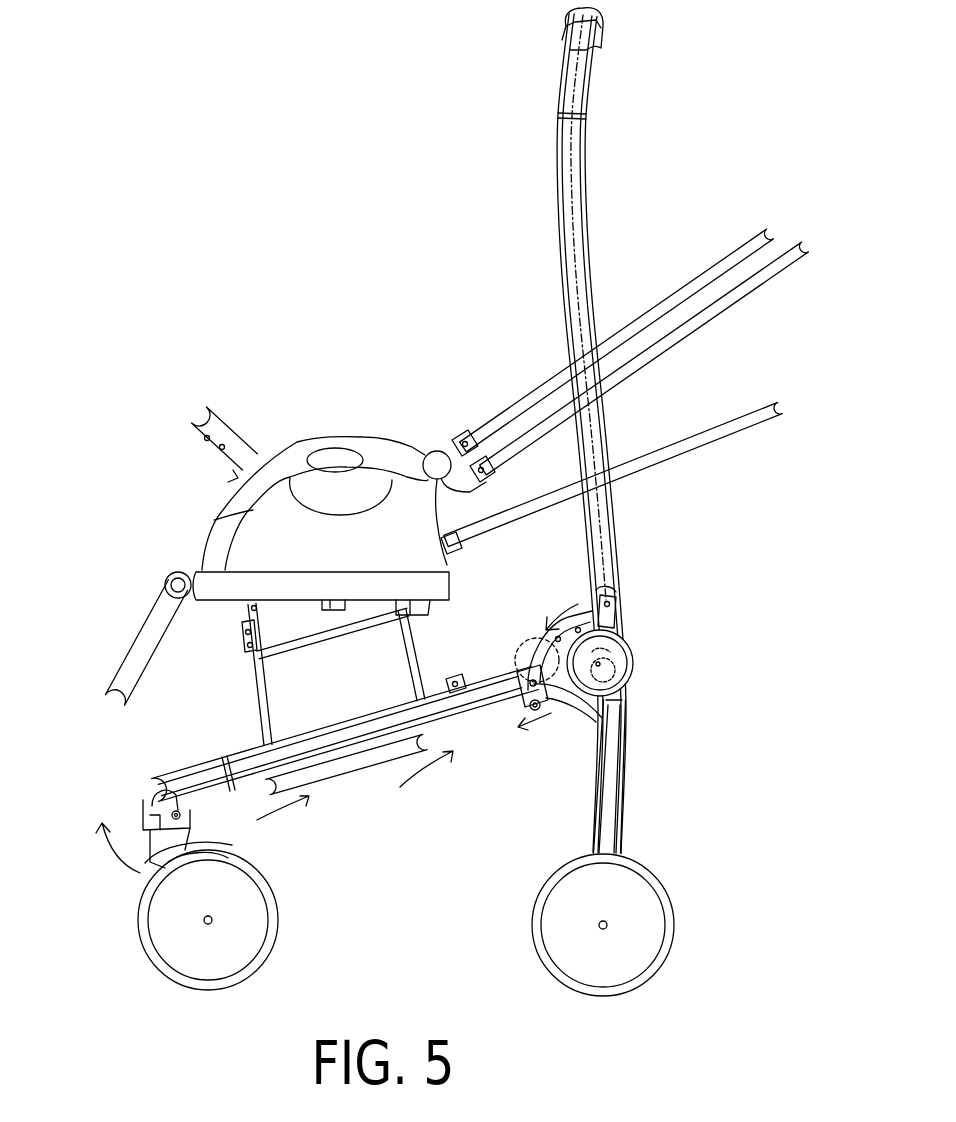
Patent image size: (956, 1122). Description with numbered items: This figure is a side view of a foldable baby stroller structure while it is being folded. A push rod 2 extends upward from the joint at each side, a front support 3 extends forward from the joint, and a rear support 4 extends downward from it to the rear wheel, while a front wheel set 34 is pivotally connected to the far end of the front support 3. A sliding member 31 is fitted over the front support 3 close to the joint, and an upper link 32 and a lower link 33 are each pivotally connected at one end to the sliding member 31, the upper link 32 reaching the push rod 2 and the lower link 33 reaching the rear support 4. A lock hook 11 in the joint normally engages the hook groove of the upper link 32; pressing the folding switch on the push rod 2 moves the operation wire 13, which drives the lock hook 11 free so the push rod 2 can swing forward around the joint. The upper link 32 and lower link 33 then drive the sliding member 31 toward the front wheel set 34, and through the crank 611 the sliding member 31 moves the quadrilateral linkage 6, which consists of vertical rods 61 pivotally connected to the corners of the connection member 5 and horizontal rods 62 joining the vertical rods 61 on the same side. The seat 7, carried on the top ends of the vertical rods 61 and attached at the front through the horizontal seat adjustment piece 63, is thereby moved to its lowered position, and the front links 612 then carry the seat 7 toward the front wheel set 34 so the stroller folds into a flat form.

The push rod 2 is at (578, 166).
The operation wire 13 is at (588, 245).
The seat 7 is at (333, 438).
The upper link 32 is at (596, 590).
The sliding member 31 is at (612, 628).
The lock hook 11 is at (623, 657).
The crank 611 is at (464, 679).
The vertical rod 61 is at (401, 643).
The horizontal rod 62 is at (290, 637).
The horizontal seat adjustment piece 63 is at (248, 608).
The quadrilateral linkage 6 is at (311, 677).
The lower link 33 is at (580, 698).
The front support 3 is at (345, 735).
The rear support 4 is at (613, 787).
The connection member 5 is at (363, 758).
The front link 612 is at (247, 767).
The front wheel set 34 is at (158, 971).